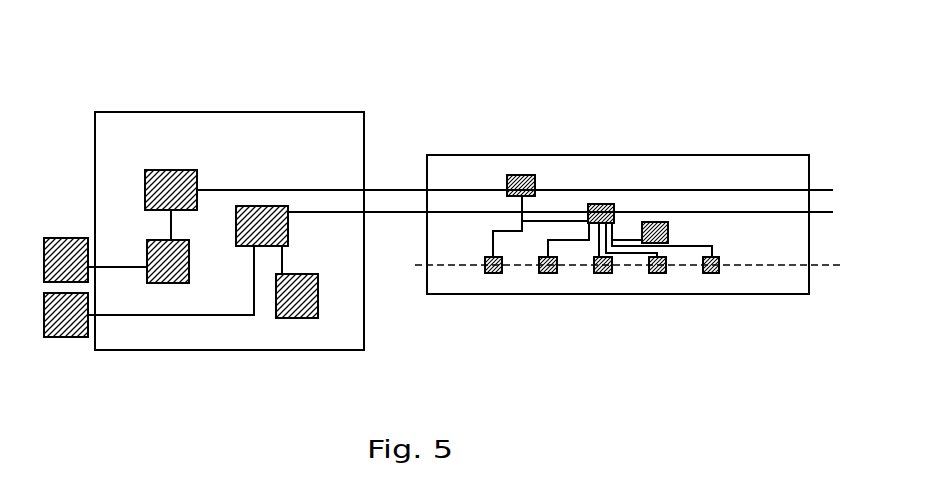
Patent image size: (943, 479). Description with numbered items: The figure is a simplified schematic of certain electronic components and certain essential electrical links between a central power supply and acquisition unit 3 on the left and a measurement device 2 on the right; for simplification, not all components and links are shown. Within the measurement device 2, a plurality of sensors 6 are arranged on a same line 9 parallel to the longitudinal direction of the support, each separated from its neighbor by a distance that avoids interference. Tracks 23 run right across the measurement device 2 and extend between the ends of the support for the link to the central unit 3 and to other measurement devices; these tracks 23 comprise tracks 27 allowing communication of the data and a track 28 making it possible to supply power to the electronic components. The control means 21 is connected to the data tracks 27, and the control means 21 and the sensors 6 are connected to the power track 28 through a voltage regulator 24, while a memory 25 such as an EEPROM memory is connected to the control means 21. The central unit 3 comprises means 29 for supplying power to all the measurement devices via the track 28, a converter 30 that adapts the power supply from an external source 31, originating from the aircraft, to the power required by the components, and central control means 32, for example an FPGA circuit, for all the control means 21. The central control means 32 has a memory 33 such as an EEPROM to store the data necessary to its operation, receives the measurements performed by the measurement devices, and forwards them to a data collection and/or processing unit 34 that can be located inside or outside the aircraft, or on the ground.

The measurement device 2 is at (545, 155).
The central power supply and acquisition unit 3 is at (229, 112).
The sensors 6 is at (705, 273).
The line 9 is at (740, 268).
The control means 21 is at (607, 204).
The tracks 23 is at (720, 212).
The voltage regulator 24 is at (518, 175).
The memory 25 is at (662, 222).
The tracks allowing communication of the data 27 is at (473, 212).
The track for supplying power 28 is at (450, 190).
The means for supplying power 29 is at (160, 170).
The converter 30 is at (178, 283).
The external source 31 is at (62, 238).
The central control means 32 is at (258, 246).
The memory 33 is at (297, 318).
The data collection and/or processing unit 34 is at (68, 337).